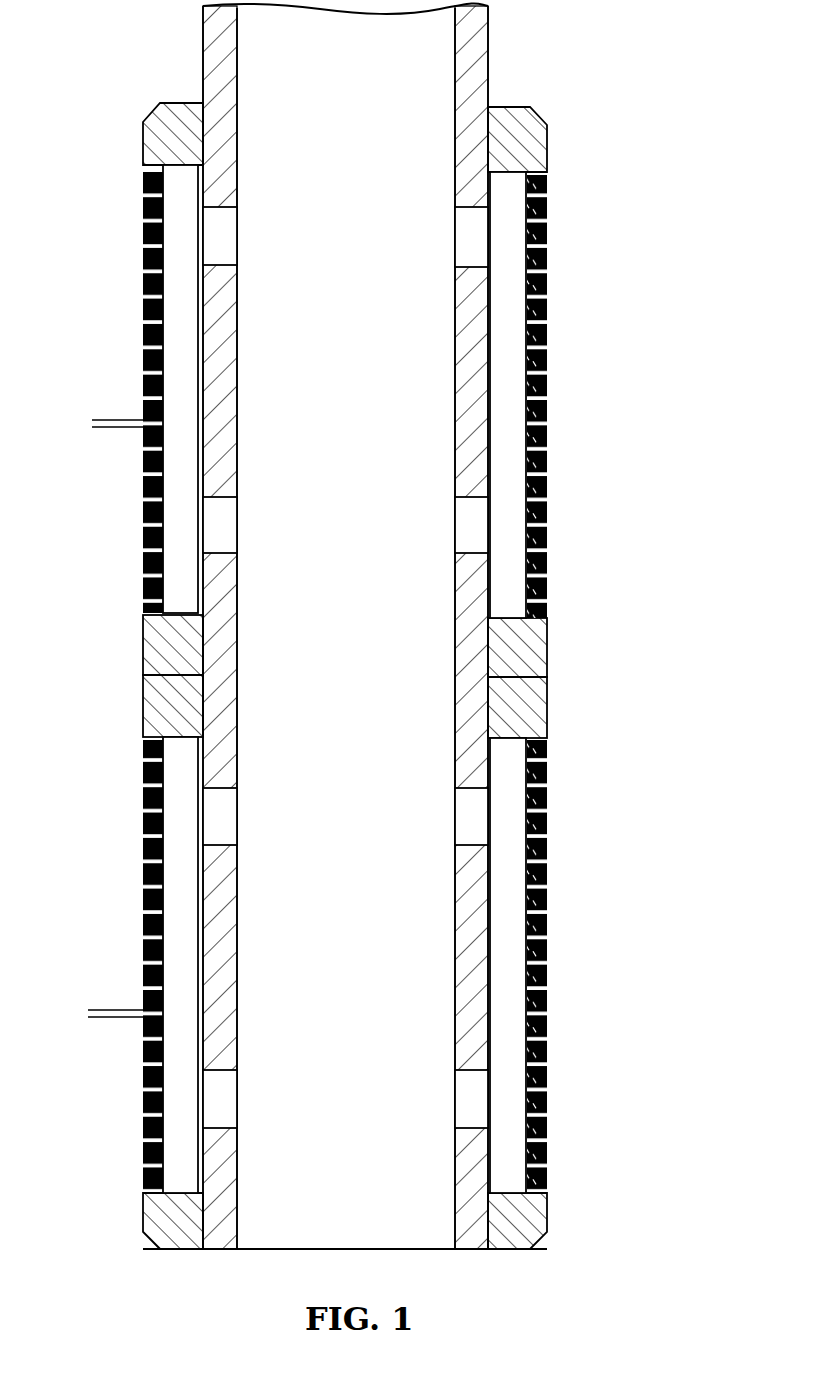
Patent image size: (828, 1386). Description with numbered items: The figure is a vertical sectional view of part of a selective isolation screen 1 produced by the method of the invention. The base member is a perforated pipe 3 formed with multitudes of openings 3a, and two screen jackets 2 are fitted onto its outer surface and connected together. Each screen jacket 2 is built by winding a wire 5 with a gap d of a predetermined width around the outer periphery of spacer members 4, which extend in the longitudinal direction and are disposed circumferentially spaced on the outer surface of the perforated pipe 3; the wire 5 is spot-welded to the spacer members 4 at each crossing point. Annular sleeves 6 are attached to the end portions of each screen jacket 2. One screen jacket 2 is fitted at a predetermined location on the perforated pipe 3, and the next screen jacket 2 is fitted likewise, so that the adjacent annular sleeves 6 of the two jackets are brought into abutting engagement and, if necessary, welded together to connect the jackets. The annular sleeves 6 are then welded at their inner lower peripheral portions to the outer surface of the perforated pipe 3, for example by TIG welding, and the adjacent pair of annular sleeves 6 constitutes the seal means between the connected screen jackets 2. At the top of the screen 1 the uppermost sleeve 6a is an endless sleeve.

The screen 1 is at (378, 624).
The screen jacket 2 is at (362, 679).
The perforated pipe 3 is at (349, 626).
The openings 3a is at (218, 230).
The spacer members 4 is at (183, 346).
The wire 5 is at (150, 282).
The annular sleeve 6 is at (165, 628).
The uppermost sleeve 6a is at (160, 115).
The gap d is at (100, 390).